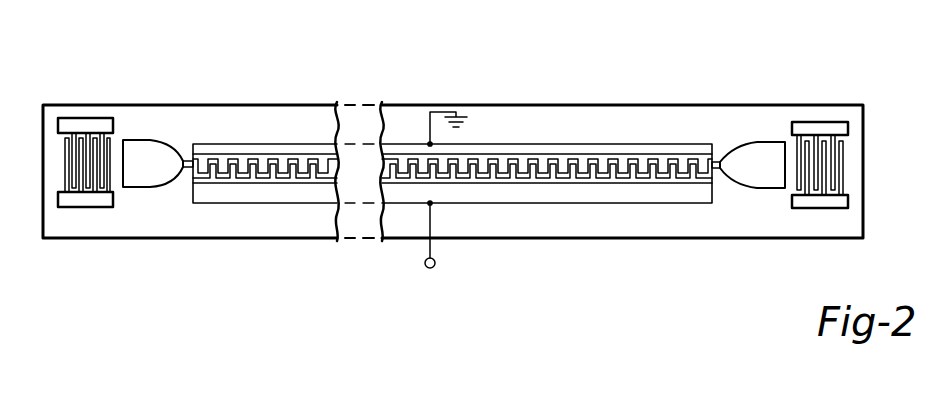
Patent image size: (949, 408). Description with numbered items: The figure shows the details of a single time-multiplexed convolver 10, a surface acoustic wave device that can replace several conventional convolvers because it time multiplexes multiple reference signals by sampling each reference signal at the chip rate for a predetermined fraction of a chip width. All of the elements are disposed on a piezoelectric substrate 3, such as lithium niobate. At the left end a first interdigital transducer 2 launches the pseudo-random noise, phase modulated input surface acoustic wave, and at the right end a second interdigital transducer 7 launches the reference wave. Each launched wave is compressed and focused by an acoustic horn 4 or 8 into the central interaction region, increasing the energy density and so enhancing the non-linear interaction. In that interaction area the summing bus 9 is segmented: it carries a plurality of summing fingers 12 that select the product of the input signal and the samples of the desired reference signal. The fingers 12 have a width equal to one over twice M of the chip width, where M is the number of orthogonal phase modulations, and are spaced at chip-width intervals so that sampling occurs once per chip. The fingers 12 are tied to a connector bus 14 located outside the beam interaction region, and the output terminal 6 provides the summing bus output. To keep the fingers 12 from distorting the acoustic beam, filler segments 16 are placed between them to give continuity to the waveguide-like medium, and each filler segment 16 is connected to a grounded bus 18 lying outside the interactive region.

The interdigital transducer 2 is at (83, 118).
The piezoelectric substrate 3 is at (657, 222).
The acoustic horn 4 is at (150, 140).
The output terminal 6 is at (426, 268).
The interdigital transducer 7 is at (820, 122).
The acoustic horn 8 is at (750, 142).
The segmented summing bus 9 is at (230, 192).
The time-multiplexed convolver 10 is at (268, 105).
The summing fingers 12 is at (625, 167).
The connector bus 14 is at (547, 173).
The filler segments 16 is at (453, 165).
The grounded bus 18 is at (523, 163).